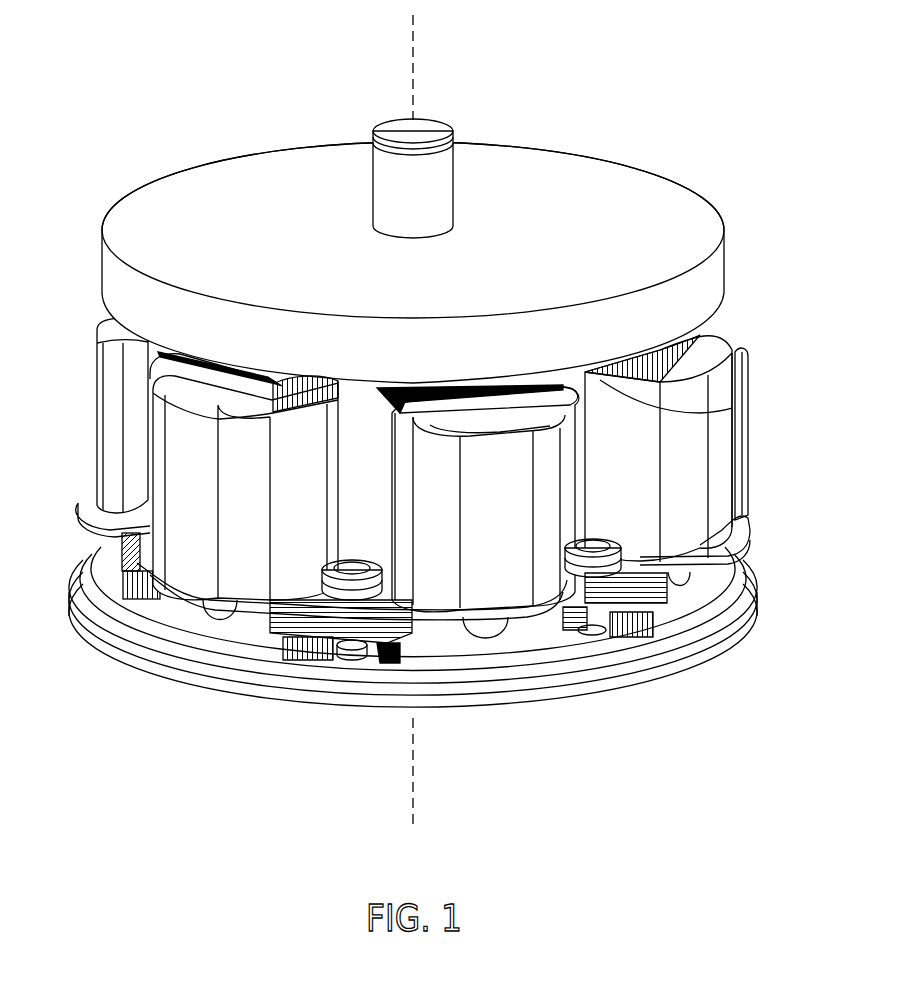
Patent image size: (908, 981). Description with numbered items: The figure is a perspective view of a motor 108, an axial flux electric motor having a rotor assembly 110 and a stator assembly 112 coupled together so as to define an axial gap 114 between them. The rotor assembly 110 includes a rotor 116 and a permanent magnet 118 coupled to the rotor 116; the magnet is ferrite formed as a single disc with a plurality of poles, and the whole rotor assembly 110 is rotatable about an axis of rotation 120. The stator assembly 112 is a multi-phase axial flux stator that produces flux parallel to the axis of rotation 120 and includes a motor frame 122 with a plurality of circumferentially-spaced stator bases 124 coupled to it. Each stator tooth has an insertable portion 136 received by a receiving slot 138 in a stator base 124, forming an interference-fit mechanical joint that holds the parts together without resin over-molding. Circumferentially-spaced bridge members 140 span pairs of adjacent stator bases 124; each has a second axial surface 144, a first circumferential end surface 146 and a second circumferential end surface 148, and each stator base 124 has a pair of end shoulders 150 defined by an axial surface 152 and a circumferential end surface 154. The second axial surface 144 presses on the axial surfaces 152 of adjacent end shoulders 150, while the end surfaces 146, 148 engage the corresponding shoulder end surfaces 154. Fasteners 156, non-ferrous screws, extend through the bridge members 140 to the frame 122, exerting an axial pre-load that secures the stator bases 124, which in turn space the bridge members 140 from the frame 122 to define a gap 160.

The motor 108 is at (766, 137).
The rotor assembly 110 is at (480, 262).
The stator assembly 112 is at (808, 462).
The axial gap 114 is at (471, 262).
The rotor 116 is at (762, 200).
The permanent magnet 118 is at (733, 411).
The axis of rotation 120 is at (413, 66).
The motor frame 122 is at (728, 594).
The stator base 124 is at (523, 643).
The insertable portion 136 is at (470, 640).
The receiving slot 138 is at (478, 630).
The bridge member 140 is at (338, 640).
The second axial surface 144 is at (630, 622).
The first circumferential end surface 146 is at (303, 623).
The second circumferential end surface 148 is at (392, 628).
The end shoulder 150 is at (395, 668).
The axial surface 152 is at (390, 660).
The circumferential end surface 154 is at (411, 654).
The fastener 156 is at (370, 566).
The gap 160 is at (319, 660).